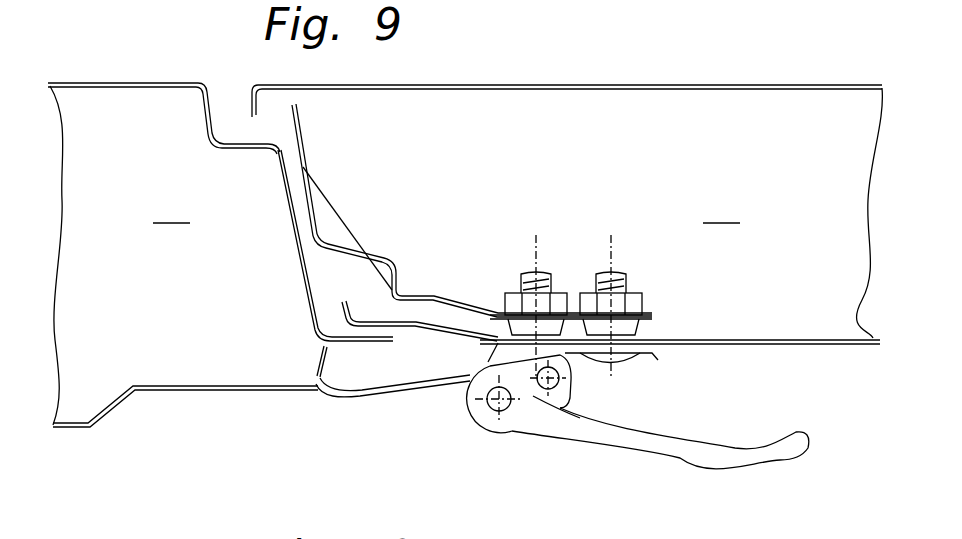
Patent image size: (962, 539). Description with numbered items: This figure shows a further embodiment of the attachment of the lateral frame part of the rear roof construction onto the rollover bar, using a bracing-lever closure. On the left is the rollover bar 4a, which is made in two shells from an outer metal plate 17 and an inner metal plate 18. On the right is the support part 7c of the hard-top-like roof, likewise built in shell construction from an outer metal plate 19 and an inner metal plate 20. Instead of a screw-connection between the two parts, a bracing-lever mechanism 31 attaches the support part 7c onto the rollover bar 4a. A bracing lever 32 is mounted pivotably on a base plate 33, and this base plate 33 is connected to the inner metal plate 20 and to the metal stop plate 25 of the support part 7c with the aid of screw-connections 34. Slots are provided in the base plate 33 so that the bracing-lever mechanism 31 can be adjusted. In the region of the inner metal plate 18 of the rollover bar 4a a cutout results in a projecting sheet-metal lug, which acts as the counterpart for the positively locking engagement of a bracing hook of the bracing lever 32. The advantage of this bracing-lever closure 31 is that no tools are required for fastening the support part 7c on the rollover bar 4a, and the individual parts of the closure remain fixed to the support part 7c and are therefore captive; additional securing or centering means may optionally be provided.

The rollover bar 4a is at (221, 255).
The support part 7c is at (587, 213).
The outer metal plate 17 is at (130, 86).
The inner metal plate 18 is at (110, 410).
The outer metal plate 19 is at (553, 84).
The inner metal plate 20 is at (782, 346).
The metal stop plate 25 is at (382, 258).
The bracing-lever mechanism 31 is at (488, 441).
The bracing lever 32 is at (776, 462).
The base plate 33 is at (655, 352).
The screw-connections 34 is at (562, 317).